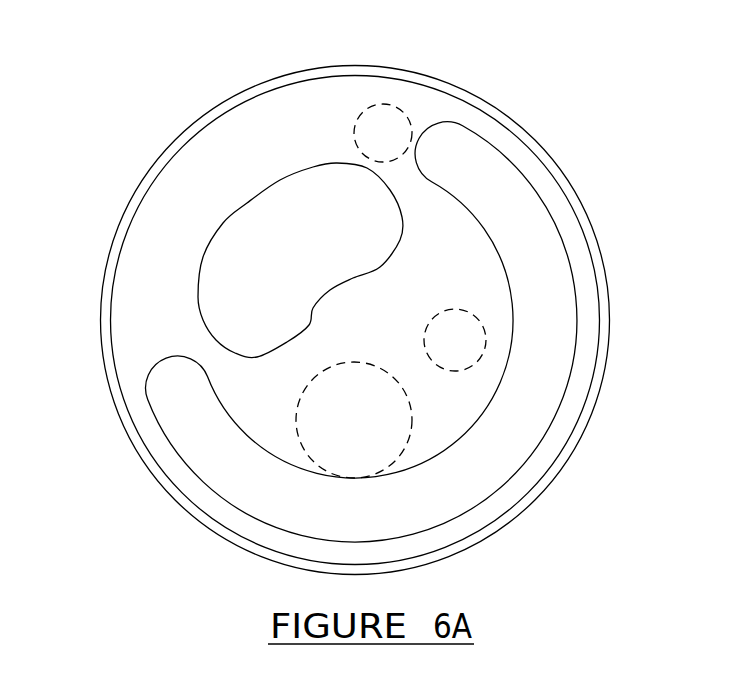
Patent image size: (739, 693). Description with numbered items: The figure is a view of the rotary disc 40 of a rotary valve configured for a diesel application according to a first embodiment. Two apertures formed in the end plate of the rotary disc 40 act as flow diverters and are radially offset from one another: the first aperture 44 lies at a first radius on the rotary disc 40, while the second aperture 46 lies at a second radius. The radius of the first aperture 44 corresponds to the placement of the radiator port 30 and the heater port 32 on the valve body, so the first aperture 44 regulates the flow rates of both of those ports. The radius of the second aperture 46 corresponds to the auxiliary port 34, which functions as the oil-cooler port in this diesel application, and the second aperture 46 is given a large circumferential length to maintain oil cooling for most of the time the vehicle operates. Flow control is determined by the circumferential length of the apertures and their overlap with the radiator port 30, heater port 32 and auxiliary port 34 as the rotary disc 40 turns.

The rotary disc 40 is at (142, 500).
The second aperture 46 is at (507, 158).
The first aperture 44 is at (247, 202).
The auxiliary port 34 is at (353, 133).
The heater port 32 is at (482, 357).
The radiator port 30 is at (411, 433).